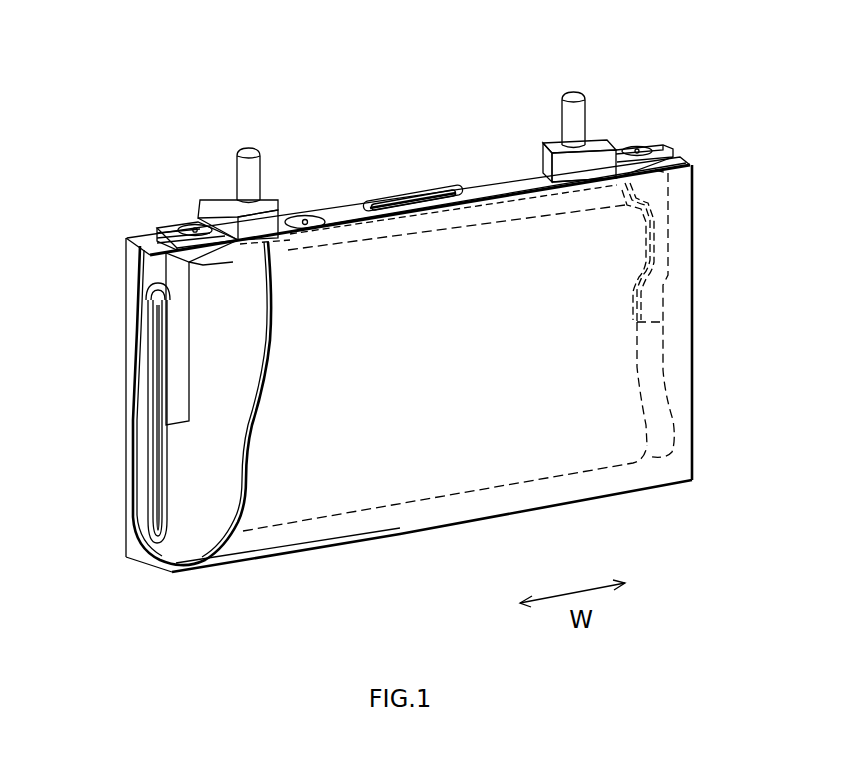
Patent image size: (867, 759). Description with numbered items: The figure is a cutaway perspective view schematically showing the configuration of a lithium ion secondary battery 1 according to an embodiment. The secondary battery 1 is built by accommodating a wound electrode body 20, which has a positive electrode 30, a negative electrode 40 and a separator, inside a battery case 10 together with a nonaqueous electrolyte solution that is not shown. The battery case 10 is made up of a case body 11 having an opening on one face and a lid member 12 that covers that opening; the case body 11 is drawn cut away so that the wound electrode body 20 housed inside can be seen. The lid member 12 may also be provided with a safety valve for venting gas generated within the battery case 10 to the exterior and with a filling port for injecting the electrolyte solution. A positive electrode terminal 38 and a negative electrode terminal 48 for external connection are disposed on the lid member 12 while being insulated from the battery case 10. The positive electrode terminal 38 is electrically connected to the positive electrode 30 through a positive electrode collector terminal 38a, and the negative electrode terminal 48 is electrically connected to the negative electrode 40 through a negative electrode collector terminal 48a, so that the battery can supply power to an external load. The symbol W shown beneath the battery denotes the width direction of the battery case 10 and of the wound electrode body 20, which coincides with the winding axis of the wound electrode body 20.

The secondary battery 1 is at (140, 97).
The battery case 10 is at (773, 133).
The case body 11 is at (690, 192).
The lid member 12 is at (690, 162).
The wound electrode body 20 is at (613, 377).
The positive electrode 30 is at (180, 470).
The positive electrode terminal 38 is at (247, 148).
The positive electrode collector terminal 38a is at (180, 382).
The negative electrode 40 is at (660, 418).
The negative electrode terminal 48 is at (575, 92).
The negative electrode collector terminal 48a is at (657, 303).